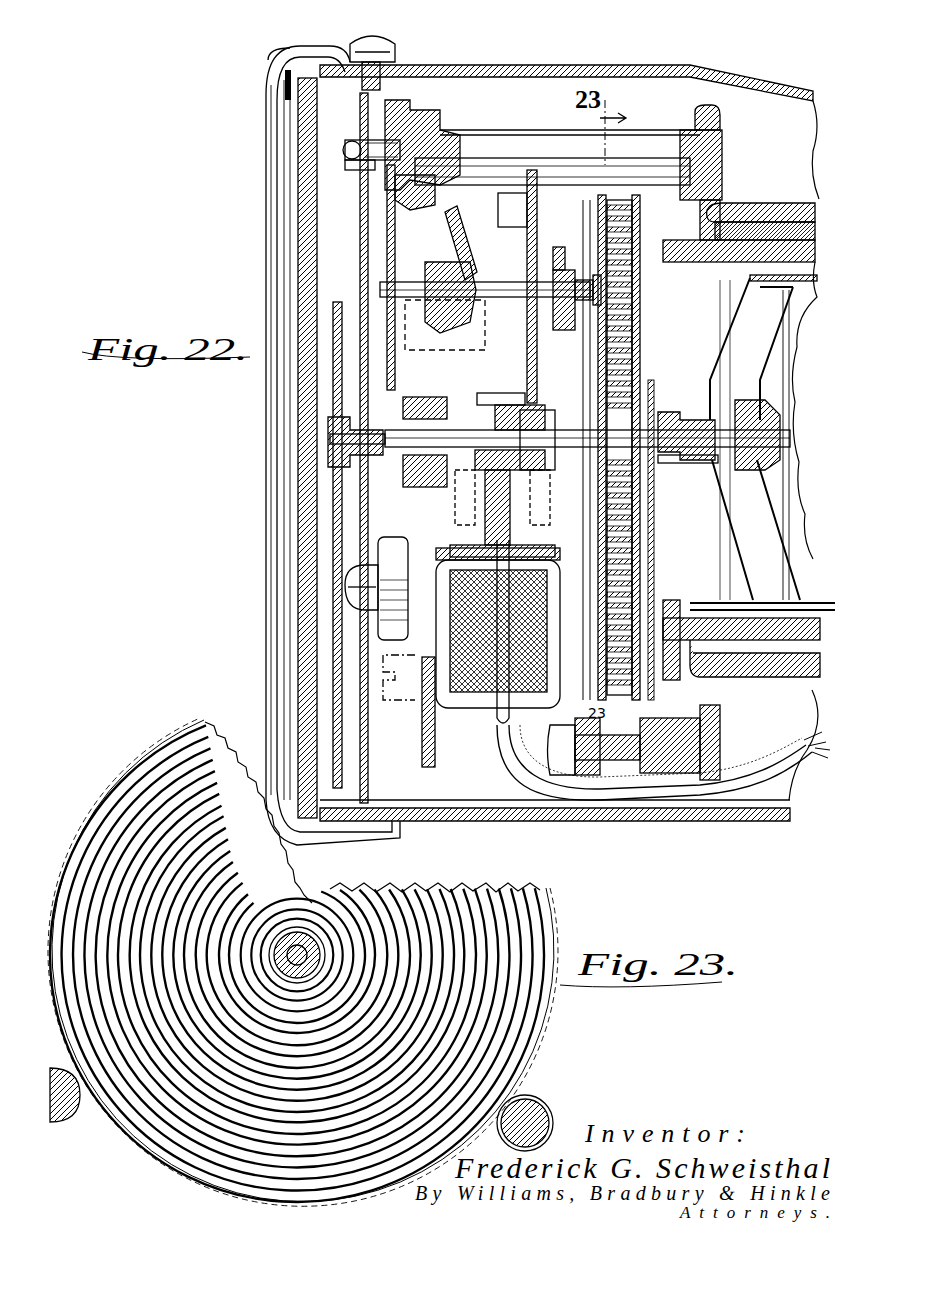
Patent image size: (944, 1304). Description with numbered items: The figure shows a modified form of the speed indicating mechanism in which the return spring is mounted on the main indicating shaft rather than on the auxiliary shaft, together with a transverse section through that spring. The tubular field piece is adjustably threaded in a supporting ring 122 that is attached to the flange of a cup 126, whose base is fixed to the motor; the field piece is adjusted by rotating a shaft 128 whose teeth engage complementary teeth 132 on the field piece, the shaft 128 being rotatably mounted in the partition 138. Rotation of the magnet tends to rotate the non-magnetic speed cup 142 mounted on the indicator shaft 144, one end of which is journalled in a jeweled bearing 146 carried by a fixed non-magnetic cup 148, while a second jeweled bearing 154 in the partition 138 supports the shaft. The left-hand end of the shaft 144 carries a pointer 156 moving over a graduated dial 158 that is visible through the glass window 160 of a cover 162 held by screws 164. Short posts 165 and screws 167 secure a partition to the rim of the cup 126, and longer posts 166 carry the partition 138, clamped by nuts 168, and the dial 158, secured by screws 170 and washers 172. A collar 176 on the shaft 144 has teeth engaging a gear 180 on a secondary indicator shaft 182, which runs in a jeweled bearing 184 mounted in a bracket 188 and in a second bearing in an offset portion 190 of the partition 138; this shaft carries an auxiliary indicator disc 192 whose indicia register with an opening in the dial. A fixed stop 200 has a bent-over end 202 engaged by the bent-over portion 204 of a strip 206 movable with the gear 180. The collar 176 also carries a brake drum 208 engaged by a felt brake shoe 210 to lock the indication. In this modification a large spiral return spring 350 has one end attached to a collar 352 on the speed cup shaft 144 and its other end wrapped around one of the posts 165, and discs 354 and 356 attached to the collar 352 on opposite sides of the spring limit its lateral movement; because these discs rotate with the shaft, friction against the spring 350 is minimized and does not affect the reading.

In FIG. 22, the supporting ring 122 is at (785, 222).
In FIG. 22, the cup 126 is at (765, 202).
In FIG. 22, the shaft 128 is at (404, 710).
In FIG. 22, the teeth 132 is at (690, 258).
In FIG. 22, the partition 138 is at (497, 720).
In FIG. 22, the speed cup 142 is at (728, 340).
In FIG. 22, the indicator shaft 144 is at (493, 430).
In FIG. 23, the indicator shaft 144 is at (305, 948).
In FIG. 22, the jeweled bearing 146 is at (780, 437).
In FIG. 22, the fixed non-magnetic cup 148 is at (760, 295).
In FIG. 22, the second jeweled bearing 154 is at (410, 468).
In FIG. 22, the pointer 156 is at (335, 365).
In FIG. 22, the graduated dial 158 is at (362, 388).
In FIG. 22, the glass window 160 is at (305, 290).
In FIG. 22, the cover 162 is at (290, 66).
In FIG. 22, the screws 164 is at (382, 40).
In FIG. 22, the short posts 165 is at (600, 800).
In FIG. 22, the longer posts 166 is at (500, 132).
In FIG. 22, the screws 167 is at (555, 745).
In FIG. 22, the nuts 168 is at (415, 110).
In FIG. 22, the screws 170 is at (350, 168).
In FIG. 22, the washers 172 is at (345, 140).
In FIG. 22, the collar 176 is at (548, 420).
In FIG. 22, the gear 180 is at (545, 175).
In FIG. 22, the secondary indicator shaft 182 is at (490, 280).
In FIG. 22, the jeweled bearing 184 is at (600, 290).
In FIG. 22, the bracket 188 is at (535, 395).
In FIG. 22, the offset portion 190 is at (462, 262).
In FIG. 22, the auxiliary indicator disc 192 is at (390, 322).
In FIG. 22, the fixed stop 200 is at (387, 429).
In FIG. 22, the bent-over end 202 is at (565, 265).
In FIG. 22, the bent-over portion 204 is at (510, 215).
In FIG. 22, the strip 206 is at (470, 243).
In FIG. 22, the brake drum 208 is at (492, 398).
In FIG. 22, the brake shoe 210 is at (510, 510).
In FIG. 22, the spiral return spring 350 is at (618, 200).
In FIG. 23, the spiral return spring 350 is at (470, 888).
In FIG. 22, the collar 352 is at (645, 425).
In FIG. 23, the collar 352 is at (292, 945).
In FIG. 22, the disc 354 is at (600, 240).
In FIG. 22, the disc 356 is at (640, 225).
In FIG. 23, the disc 356 is at (548, 905).